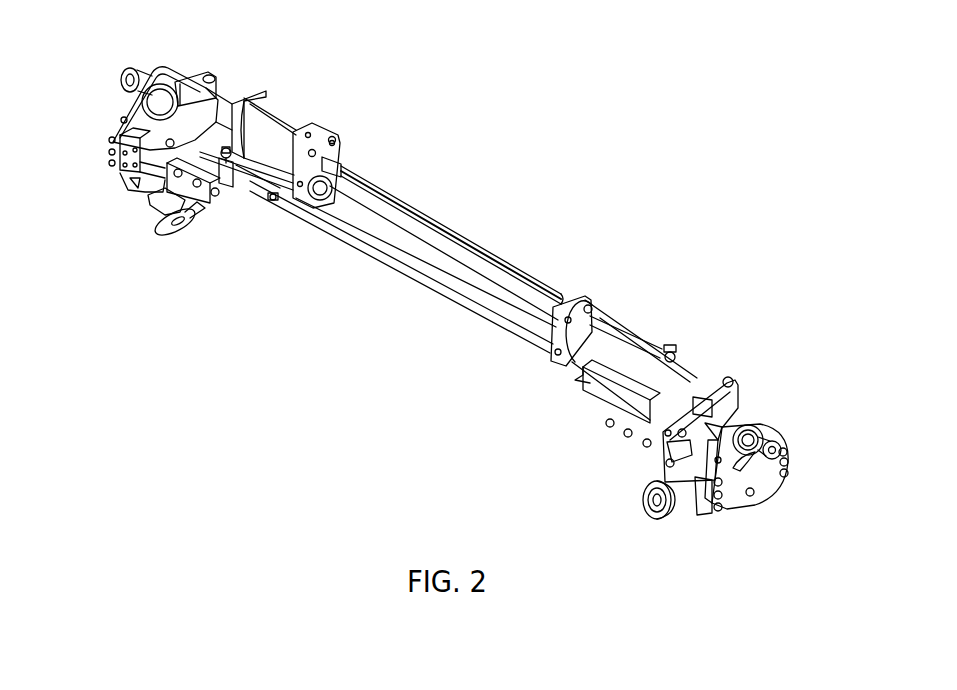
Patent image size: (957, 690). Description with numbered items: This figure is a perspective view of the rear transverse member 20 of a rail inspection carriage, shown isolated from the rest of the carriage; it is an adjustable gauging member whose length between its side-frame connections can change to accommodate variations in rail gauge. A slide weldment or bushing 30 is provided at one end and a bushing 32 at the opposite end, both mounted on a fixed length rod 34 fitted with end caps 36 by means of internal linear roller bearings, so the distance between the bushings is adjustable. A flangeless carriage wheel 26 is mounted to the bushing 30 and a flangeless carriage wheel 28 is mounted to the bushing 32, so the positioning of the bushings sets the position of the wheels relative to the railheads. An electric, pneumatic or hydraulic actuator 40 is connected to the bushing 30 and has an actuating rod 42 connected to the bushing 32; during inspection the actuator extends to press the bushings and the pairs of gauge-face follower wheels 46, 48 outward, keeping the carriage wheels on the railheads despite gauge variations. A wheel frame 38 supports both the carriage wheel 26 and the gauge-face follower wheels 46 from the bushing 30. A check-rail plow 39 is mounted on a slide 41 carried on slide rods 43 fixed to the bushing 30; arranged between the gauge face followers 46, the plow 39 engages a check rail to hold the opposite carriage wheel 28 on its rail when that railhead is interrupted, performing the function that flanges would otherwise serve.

The rear transverse member 20 is at (504, 177).
The carriage wheel 26 is at (155, 146).
The carriage wheel 28 is at (735, 510).
The slide weldment or bushing 30 is at (176, 88).
The bushing 32 is at (678, 378).
The fixed length rod 34 is at (762, 437).
The end caps 36 is at (138, 67).
The wheel frame 38 is at (125, 172).
The check-rail plow 39 is at (202, 211).
The actuator 40 is at (283, 122).
The slide 41 is at (226, 188).
The actuating rod 42 is at (538, 277).
The slide rods 43 is at (258, 192).
The gauge-face follower wheels 46 is at (170, 234).
The gauge-face follower wheels 48 is at (666, 520).